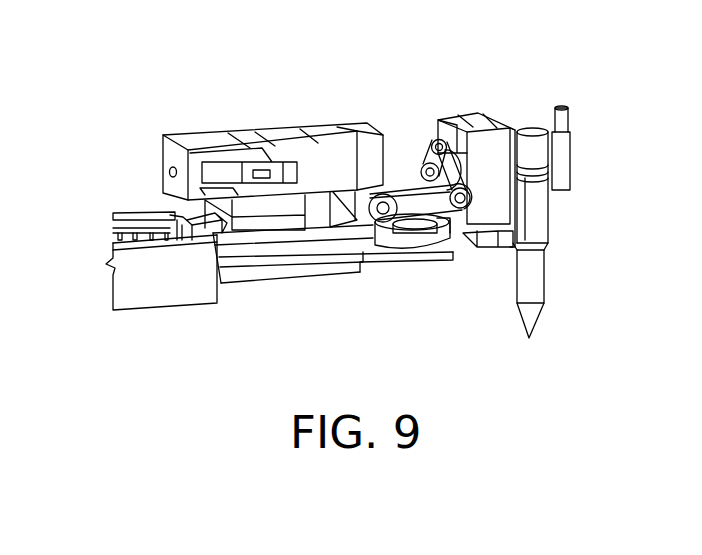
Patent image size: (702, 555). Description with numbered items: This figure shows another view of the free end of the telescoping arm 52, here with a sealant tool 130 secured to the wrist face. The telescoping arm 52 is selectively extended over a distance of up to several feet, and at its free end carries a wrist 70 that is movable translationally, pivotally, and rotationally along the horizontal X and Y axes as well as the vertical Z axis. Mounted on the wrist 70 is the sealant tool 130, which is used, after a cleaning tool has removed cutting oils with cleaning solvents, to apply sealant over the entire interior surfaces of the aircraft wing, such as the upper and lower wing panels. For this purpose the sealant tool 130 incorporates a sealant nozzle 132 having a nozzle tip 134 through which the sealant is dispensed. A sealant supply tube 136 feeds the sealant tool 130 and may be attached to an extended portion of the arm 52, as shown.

The telescoping arm 52 is at (125, 195).
The wrist 70 is at (468, 95).
The sealant tool 130 is at (561, 202).
The sealant nozzle 132 is at (538, 283).
The nozzle tip 134 is at (543, 320).
The sealant supply tube 136 is at (252, 115).